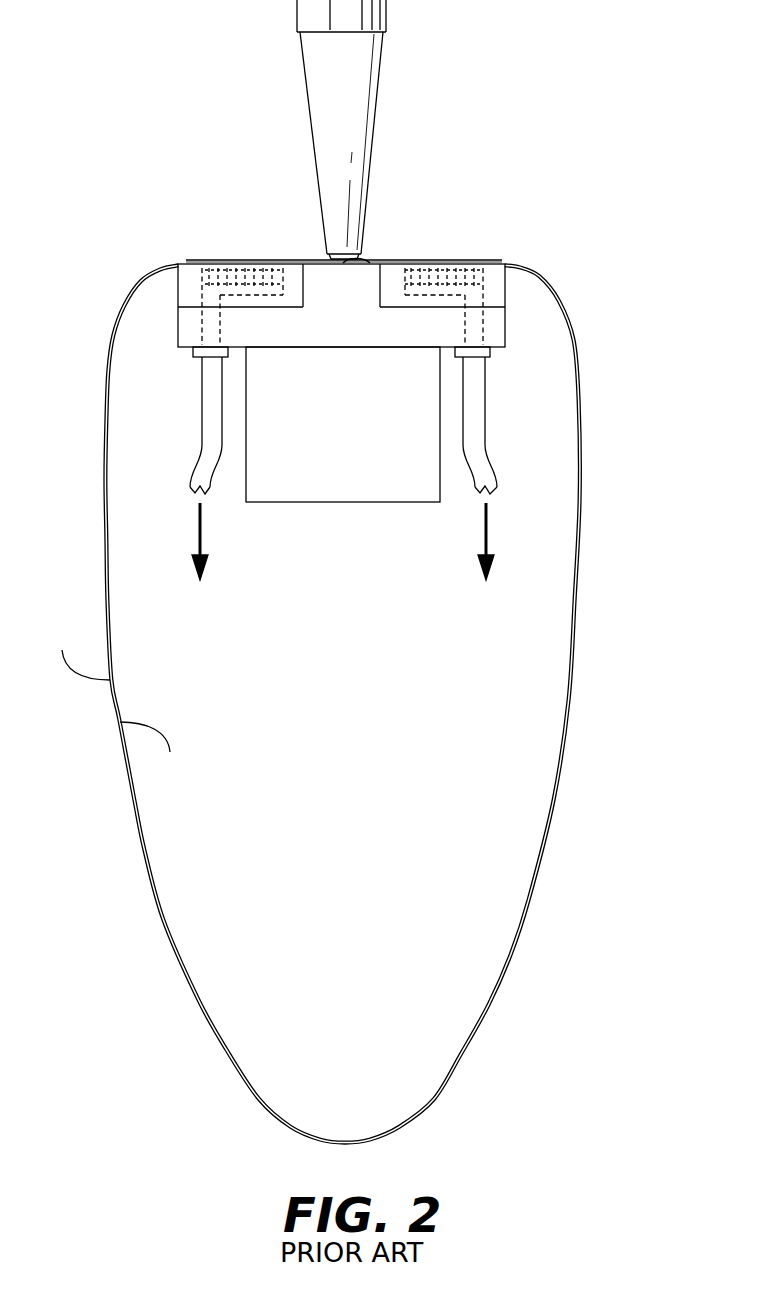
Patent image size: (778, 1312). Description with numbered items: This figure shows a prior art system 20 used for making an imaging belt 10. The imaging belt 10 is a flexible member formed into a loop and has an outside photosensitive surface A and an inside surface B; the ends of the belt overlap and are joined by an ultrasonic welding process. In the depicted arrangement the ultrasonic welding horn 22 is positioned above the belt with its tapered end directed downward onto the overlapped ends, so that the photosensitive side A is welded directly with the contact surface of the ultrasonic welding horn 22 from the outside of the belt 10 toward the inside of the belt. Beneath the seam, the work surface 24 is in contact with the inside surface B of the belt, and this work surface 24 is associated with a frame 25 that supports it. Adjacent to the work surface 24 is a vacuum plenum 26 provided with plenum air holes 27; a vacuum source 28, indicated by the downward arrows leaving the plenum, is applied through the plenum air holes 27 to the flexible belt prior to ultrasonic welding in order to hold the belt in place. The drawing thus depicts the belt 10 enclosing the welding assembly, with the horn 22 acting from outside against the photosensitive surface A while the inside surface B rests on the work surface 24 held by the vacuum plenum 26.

The imaging belt 10 is at (163, 918).
The prior art system 20 is at (384, 359).
The ultrasonic welding horn 22 is at (313, 77).
The work surface 24 is at (367, 262).
The frame 25 is at (343, 503).
The vacuum plenum 26 is at (192, 272).
The plenum air holes 27 is at (237, 268).
The vacuum source 28 is at (343, 484).
The photosensitive surface A is at (80, 653).
The inside surface B is at (150, 754).